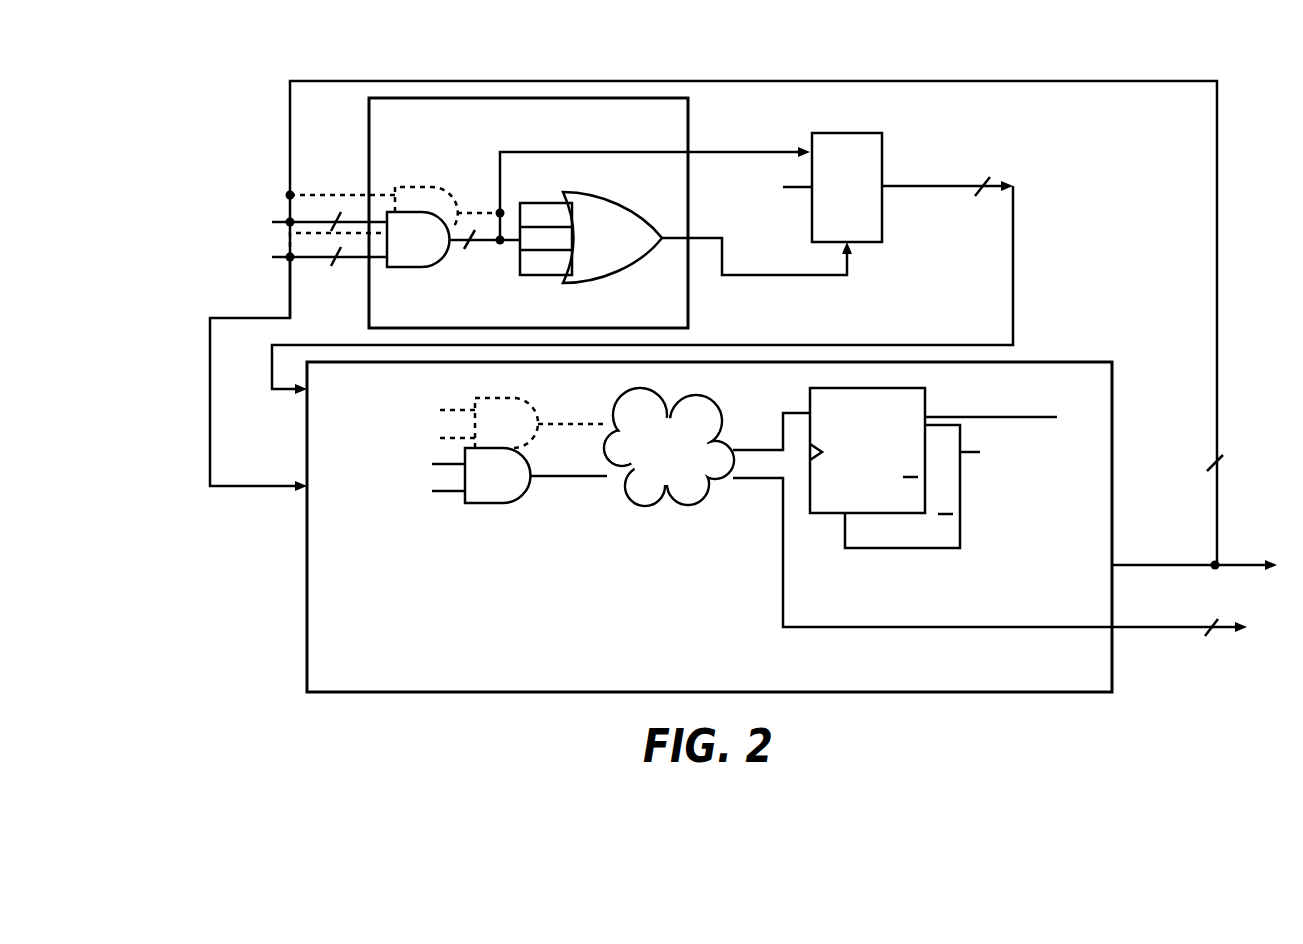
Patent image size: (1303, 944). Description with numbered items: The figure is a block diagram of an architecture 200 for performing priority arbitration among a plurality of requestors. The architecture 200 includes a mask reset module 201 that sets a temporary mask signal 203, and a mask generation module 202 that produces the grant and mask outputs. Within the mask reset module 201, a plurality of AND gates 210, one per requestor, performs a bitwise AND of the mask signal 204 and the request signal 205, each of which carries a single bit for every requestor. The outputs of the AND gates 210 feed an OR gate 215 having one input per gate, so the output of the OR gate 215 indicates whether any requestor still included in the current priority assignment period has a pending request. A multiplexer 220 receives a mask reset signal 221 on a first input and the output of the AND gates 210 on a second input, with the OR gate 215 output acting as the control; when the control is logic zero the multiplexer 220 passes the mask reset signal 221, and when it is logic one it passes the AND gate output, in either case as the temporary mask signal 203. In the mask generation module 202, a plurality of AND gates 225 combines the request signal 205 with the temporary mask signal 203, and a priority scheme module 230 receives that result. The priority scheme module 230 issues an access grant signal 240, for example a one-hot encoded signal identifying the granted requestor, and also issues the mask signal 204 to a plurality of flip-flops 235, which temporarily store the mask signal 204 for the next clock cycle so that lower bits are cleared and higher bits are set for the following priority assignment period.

The architecture 200 is at (223, 72).
The mask reset module 201 is at (688, 105).
The mask generation module 202 is at (1112, 413).
The temporary mask signal 203 is at (1013, 268).
The mask signal 204 is at (290, 163).
The request signal 205 is at (290, 310).
The plurality of AND gates 210 is at (403, 185).
The OR gate 215 is at (607, 206).
The multiplexer 220 is at (862, 244).
The mask reset signal 221 is at (794, 192).
The plurality of AND gates 225 is at (494, 504).
The priority scheme module 230 is at (617, 494).
The plurality of flip-flops 235 is at (810, 400).
The access grant signal 240 is at (1011, 629).